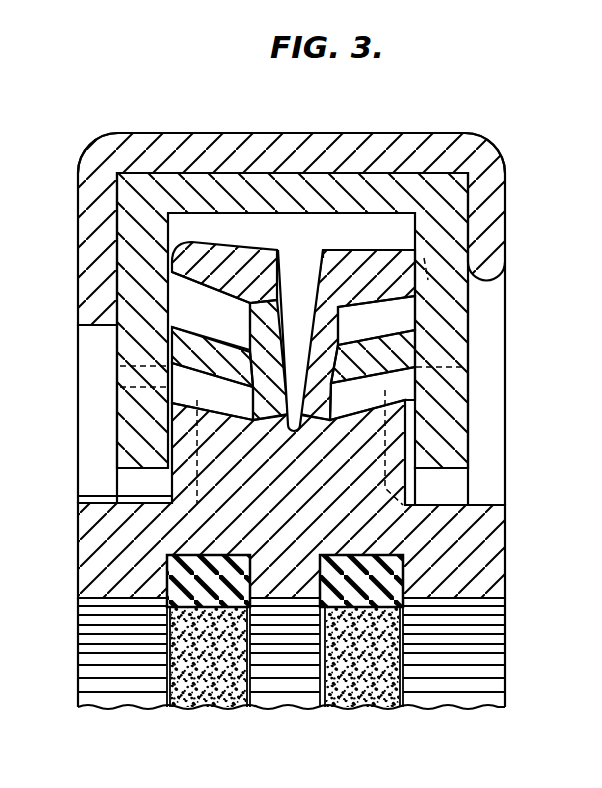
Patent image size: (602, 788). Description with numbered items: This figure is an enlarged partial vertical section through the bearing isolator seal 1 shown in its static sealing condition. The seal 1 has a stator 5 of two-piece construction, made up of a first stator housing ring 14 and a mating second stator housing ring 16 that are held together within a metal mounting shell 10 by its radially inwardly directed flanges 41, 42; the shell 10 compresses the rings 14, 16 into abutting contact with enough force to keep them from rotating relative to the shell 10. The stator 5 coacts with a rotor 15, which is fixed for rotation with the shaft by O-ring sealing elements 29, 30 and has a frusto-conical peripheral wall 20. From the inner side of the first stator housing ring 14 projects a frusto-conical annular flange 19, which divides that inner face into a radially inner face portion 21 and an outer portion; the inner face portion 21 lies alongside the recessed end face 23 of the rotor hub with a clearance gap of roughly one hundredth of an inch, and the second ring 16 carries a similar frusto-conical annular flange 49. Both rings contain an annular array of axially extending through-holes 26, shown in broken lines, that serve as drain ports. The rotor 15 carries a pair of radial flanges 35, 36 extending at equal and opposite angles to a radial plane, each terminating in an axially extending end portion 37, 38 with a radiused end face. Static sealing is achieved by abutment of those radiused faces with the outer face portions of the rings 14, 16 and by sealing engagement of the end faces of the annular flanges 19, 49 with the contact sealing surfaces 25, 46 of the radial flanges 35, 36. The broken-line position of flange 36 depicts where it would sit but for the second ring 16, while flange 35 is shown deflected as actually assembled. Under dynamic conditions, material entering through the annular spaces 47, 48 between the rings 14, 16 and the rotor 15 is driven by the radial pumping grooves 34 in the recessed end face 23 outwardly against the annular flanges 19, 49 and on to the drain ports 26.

The seal 1 is at (60, 604).
The stator 5 is at (116, 345).
The metal mounting shell 10 is at (265, 158).
The first stator housing ring 14 is at (150, 185).
The rotor 15 is at (112, 534).
The second stator housing ring 16 is at (468, 330).
The annular flange 19 is at (220, 342).
The frusto-conical peripheral wall 20 is at (372, 406).
The radially inner face portion 21 is at (209, 381).
The recessed end face 23 is at (117, 499).
The contact sealing surface 25 is at (212, 391).
The through-holes 26 is at (118, 378).
The O-ring sealing element 29 is at (207, 580).
The O-ring sealing element 30 is at (358, 586).
The radial pumping grooves 34 is at (190, 481).
The radial flange 35 is at (285, 304).
The radial flange 36 is at (320, 256).
The axially extending end portion 37 is at (222, 246).
The axially extending end portion 38 is at (363, 265).
The radially inwardly directed flange 41 is at (78, 178).
The radially inwardly directed flange 42 is at (505, 178).
The contact sealing surface 46 is at (328, 410).
The annular space 47 is at (119, 482).
The annular space 48 is at (435, 492).
The frusto-conical annular flange 49 is at (371, 352).